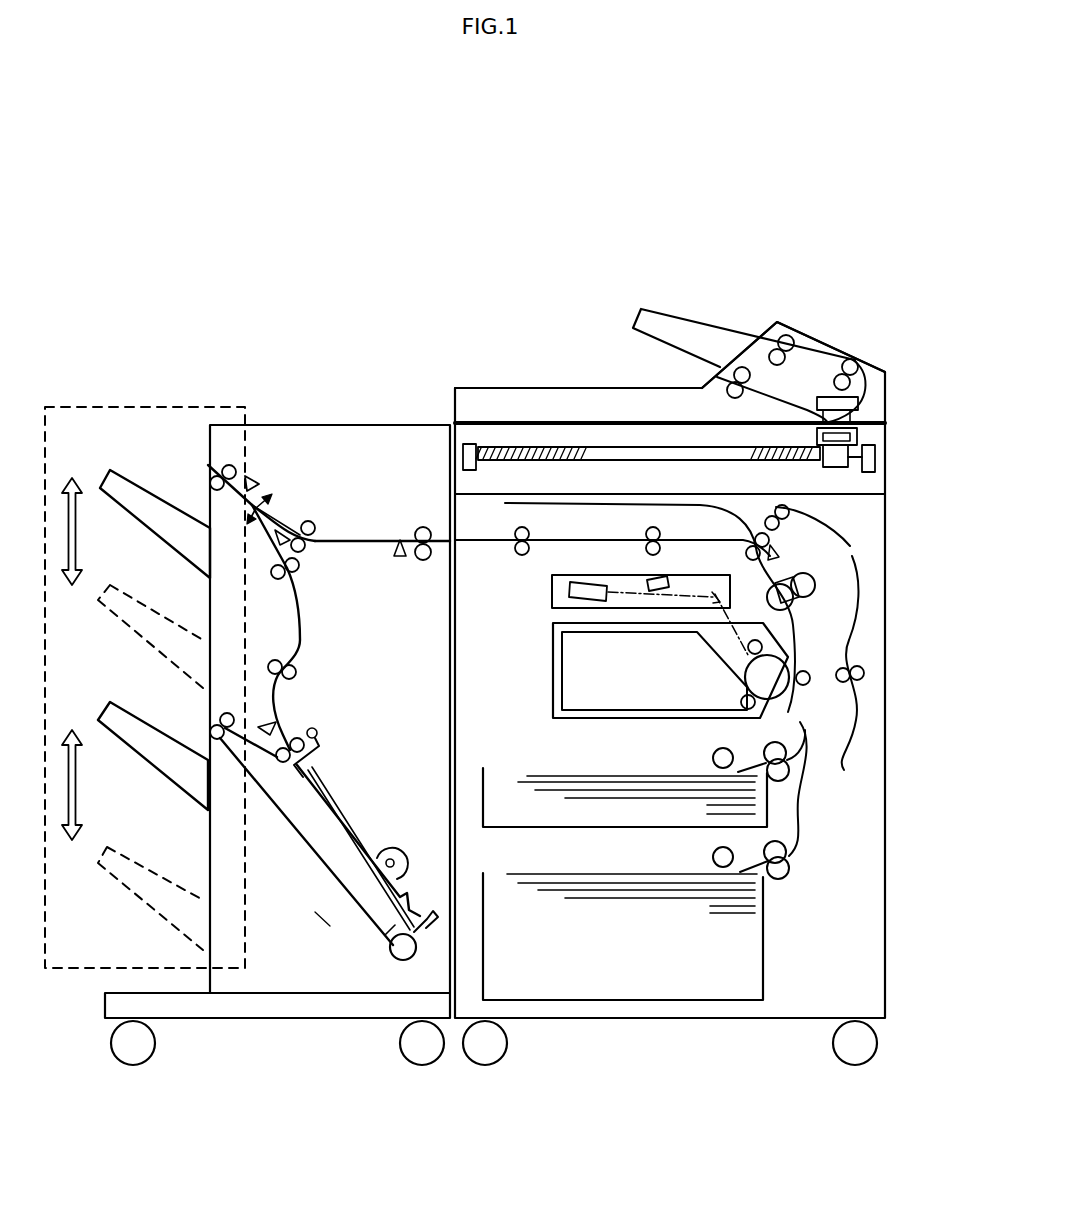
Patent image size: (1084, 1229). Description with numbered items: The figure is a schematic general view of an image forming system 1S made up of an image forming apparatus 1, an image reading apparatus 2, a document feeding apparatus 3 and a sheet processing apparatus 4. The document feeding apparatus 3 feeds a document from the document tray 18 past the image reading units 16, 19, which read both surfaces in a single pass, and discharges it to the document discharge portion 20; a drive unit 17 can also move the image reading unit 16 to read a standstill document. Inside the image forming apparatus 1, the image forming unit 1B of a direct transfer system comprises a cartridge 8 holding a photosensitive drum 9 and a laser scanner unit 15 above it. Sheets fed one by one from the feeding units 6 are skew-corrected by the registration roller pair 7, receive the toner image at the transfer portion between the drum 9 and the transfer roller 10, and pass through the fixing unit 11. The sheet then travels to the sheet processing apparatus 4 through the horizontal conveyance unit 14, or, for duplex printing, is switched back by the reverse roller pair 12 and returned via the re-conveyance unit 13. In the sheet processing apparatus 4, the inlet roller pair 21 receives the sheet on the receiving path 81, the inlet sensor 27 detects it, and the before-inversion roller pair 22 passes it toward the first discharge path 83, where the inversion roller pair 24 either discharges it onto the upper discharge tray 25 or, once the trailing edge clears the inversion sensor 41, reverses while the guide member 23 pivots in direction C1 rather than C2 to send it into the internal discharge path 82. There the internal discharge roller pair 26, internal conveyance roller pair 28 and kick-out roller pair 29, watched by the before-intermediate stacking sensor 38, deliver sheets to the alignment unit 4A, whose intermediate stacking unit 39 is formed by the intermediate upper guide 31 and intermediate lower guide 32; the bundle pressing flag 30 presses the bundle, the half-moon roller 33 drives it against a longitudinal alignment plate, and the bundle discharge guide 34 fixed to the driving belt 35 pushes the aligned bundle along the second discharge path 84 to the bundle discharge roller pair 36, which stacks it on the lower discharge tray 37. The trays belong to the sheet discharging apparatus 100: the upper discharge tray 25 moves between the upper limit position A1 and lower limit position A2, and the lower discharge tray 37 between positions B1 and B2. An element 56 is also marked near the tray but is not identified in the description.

The image forming apparatus 1 is at (884, 821).
The image forming system 1S is at (476, 216).
The image forming unit 1B is at (552, 693).
The image reading apparatus 2 is at (885, 474).
The document feeding apparatus 3 is at (850, 346).
The sheet processing apparatus 4 is at (228, 424).
The alignment unit 4A is at (320, 912).
The feeding units 6 is at (771, 805).
The registration roller pair 7 is at (842, 724).
The cartridge 8 is at (630, 724).
The photosensitive drum 9 is at (779, 657).
The transfer roller 10 is at (864, 669).
The fixing unit 11 is at (821, 575).
The reverse roller pair 12 is at (790, 511).
The re-conveyance unit 13 is at (860, 606).
The horizontal conveyance unit 14 is at (574, 540).
The laser scanner unit 15 is at (552, 592).
The image reading unit 16 is at (862, 438).
The drive unit 17 is at (666, 445).
The document tray 18 is at (664, 308).
The image reading unit 19 is at (827, 394).
The document discharge portion 20 is at (470, 387).
The inlet roller pair 21 is at (428, 526).
The before-inversion roller pair 22 is at (311, 520).
The guide member 23 is at (286, 495).
The inversion roller pair 24 is at (223, 492).
The upper discharge tray 25 is at (130, 472).
The internal discharge roller pair 26 is at (300, 567).
The inlet sensor 27 is at (399, 560).
The internal conveyance roller pair 28 is at (272, 660).
The kick-out roller pair 29 is at (301, 740).
The bundle pressing flag 30 is at (317, 728).
The intermediate upper guide 31 is at (330, 800).
The intermediate lower guide 32 is at (367, 890).
The half-moon roller 33 is at (400, 848).
The bundle discharge guide 34 is at (421, 943).
The driving belt 35 is at (378, 940).
The bundle discharge roller pair 36 is at (240, 712).
The lower discharge tray 37 is at (130, 703).
The before-intermediate stacking sensor 38 is at (243, 752).
The intermediate stacking unit 39 is at (434, 940).
The inversion sensor 41 is at (249, 475).
The stacking section 56 is at (338, 904).
The receiving path 81 is at (395, 539).
The internal discharge path 82 is at (298, 637).
The first discharge path 83 is at (222, 465).
The second discharge path 84 is at (262, 731).
The sheet discharging apparatus 100 is at (134, 406).
The upper limit position A1 is at (72, 517).
The lower limit position A2 is at (76, 590).
The upper limit position B1 is at (77, 772).
The lower limit position B2 is at (74, 858).
The C1 direction C1 is at (275, 489).
The C2 direction C2 is at (261, 531).